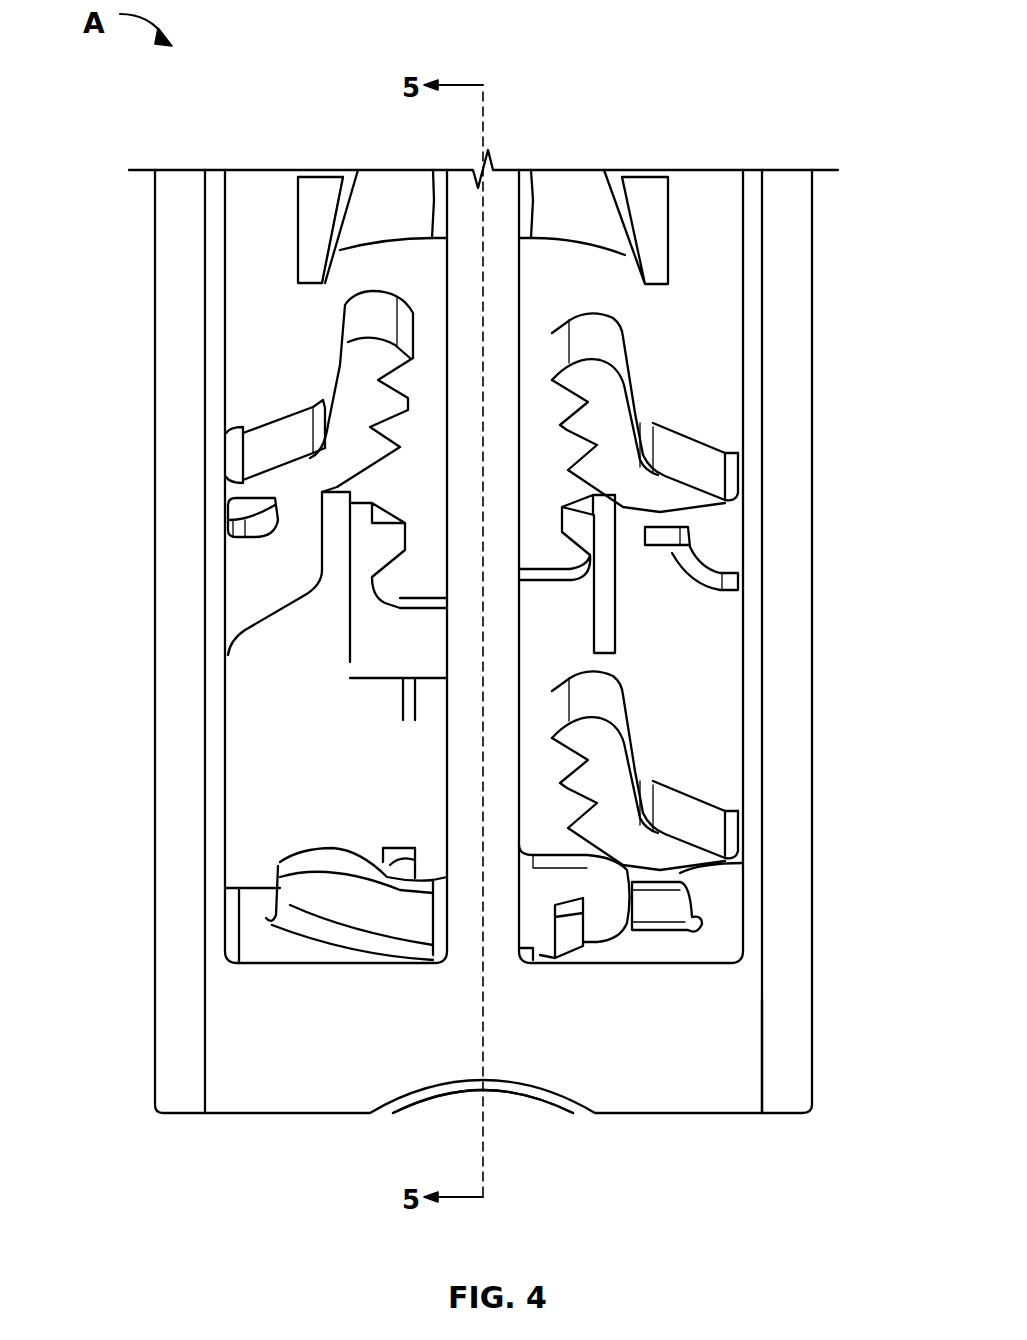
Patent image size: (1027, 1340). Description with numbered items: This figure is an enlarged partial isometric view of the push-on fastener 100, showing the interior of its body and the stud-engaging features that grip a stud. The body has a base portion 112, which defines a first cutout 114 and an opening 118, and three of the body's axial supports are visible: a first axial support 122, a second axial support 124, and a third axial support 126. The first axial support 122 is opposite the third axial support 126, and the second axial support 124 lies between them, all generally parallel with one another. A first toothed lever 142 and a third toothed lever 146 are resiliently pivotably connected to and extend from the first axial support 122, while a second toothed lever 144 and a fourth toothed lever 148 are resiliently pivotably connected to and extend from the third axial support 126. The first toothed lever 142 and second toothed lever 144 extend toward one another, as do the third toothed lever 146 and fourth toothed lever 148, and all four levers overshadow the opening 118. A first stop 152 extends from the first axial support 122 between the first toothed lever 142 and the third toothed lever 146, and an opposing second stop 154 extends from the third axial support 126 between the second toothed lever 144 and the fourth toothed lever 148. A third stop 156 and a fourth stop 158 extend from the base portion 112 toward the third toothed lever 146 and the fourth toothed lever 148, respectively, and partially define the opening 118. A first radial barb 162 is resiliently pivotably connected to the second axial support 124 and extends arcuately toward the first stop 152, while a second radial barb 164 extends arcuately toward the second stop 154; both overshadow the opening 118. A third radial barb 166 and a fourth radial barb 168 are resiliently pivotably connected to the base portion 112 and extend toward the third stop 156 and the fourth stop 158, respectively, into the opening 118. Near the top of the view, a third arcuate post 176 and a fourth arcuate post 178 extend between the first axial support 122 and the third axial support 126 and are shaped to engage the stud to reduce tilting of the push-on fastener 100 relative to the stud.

The push-on fastener 100 is at (155, 128).
The base portion 112 is at (800, 1080).
The first cutout 114 is at (507, 1102).
The opening 118 is at (552, 876).
The first axial support 122 is at (172, 228).
The second axial support 124 is at (497, 212).
The third axial support 126 is at (800, 222).
The first toothed lever 142 is at (362, 318).
The second toothed lever 144 is at (610, 345).
The third toothed lever 146 is at (370, 690).
The fourth toothed lever 148 is at (607, 740).
The first stop 152 is at (232, 512).
The second stop 154 is at (672, 556).
The third stop 156 is at (230, 885).
The fourth stop 158 is at (695, 905).
The first radial barb 162 is at (352, 500).
The second radial barb 164 is at (605, 522).
The third radial barb 166 is at (392, 845).
The fourth radial barb 168 is at (570, 930).
The third arcuate post 176 is at (320, 212).
The fourth arcuate post 178 is at (648, 212).